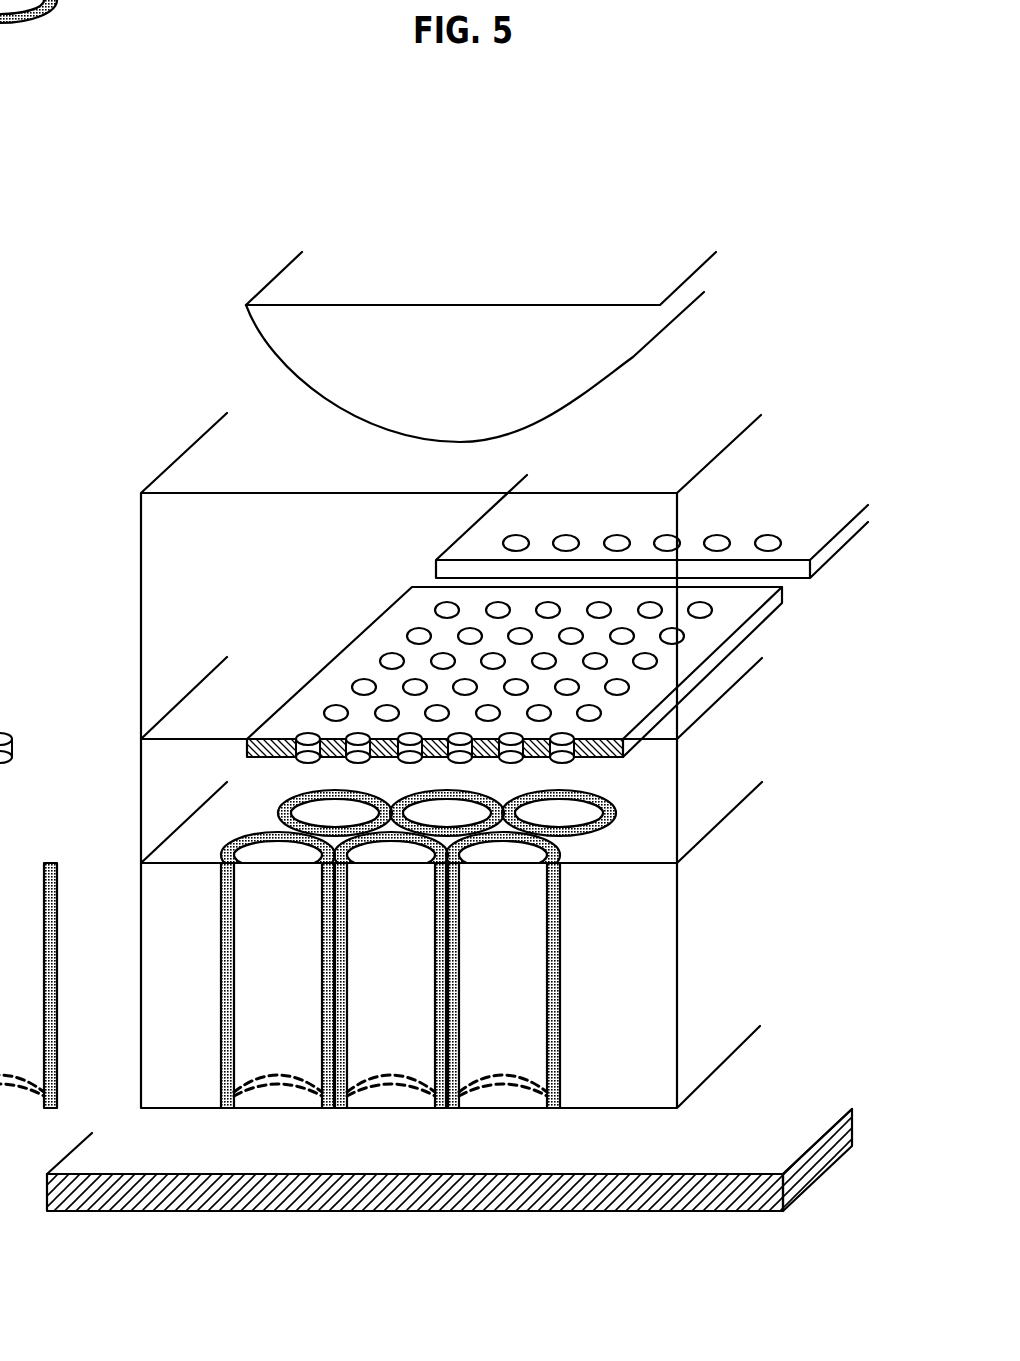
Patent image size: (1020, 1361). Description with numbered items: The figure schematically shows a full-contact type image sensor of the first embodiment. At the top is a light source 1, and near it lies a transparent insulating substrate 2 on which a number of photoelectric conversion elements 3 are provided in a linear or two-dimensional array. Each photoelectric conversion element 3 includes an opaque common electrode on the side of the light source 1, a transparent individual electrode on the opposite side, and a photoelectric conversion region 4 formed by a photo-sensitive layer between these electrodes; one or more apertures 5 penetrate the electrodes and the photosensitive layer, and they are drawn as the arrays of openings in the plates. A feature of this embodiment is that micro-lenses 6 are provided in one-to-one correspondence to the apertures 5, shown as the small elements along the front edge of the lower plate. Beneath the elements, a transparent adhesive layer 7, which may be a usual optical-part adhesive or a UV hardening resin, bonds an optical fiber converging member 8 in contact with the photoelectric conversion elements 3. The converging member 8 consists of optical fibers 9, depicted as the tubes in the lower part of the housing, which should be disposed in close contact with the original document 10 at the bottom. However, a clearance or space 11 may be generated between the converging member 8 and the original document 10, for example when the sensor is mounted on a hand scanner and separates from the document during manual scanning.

The light source 1 is at (293, 288).
The transparent insulating substrate 2 is at (172, 642).
The photoelectric conversion elements 3 is at (312, 660).
The photoelectric conversion region 4 is at (818, 525).
The apertures 5 is at (392, 660).
The micro-lenses 6 is at (307, 757).
The adhesive layer 7 is at (733, 753).
The optical fiber converging member 8 is at (733, 930).
The optical fibers 9 is at (528, 980).
The original document 10 is at (90, 1160).
The clearance or space 11 is at (637, 1145).